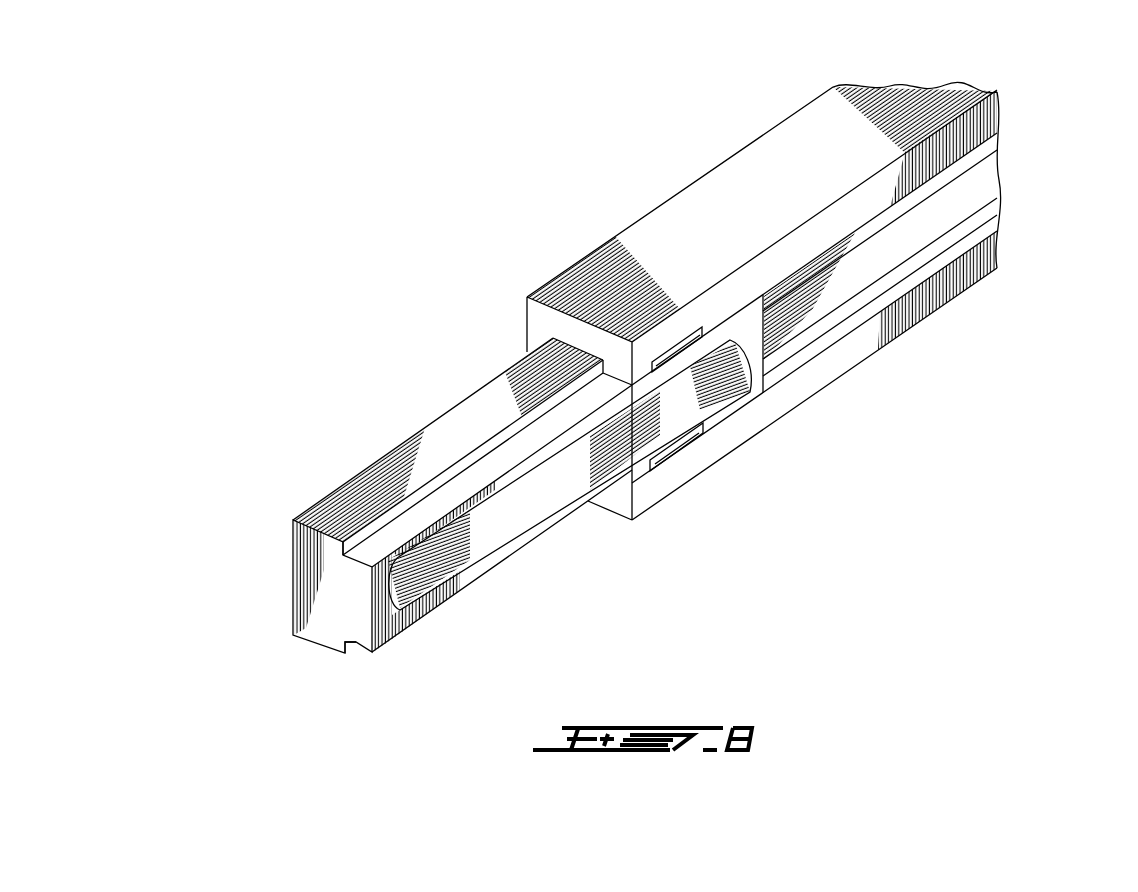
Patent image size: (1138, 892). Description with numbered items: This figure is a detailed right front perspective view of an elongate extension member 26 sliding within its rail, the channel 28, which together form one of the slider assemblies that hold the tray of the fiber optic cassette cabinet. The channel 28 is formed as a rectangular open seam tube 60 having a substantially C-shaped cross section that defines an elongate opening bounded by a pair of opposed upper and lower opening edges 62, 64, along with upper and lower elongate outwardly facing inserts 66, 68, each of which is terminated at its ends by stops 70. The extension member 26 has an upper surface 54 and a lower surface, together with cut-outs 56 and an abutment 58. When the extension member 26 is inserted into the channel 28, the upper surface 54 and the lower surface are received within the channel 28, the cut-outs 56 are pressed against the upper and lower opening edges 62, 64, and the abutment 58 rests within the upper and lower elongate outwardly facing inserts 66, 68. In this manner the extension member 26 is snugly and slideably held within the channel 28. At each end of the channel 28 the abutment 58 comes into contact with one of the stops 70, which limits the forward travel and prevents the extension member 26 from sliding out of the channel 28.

The elongate extension member 26 is at (584, 524).
The channel 28 is at (816, 350).
The upper surface 54 is at (453, 437).
The cut-outs 56 is at (367, 556).
The abutment 58 is at (763, 391).
The rectangular open seam tube 60 is at (972, 187).
The upper opening edge 62 is at (692, 317).
The lower opening edge 64 is at (733, 433).
The upper elongate outwardly facing insert 66 is at (823, 247).
The lower elongate outwardly facing insert 68 is at (832, 337).
The stops 70 is at (646, 493).